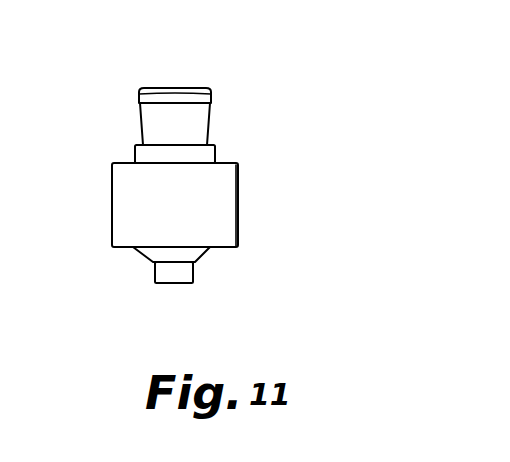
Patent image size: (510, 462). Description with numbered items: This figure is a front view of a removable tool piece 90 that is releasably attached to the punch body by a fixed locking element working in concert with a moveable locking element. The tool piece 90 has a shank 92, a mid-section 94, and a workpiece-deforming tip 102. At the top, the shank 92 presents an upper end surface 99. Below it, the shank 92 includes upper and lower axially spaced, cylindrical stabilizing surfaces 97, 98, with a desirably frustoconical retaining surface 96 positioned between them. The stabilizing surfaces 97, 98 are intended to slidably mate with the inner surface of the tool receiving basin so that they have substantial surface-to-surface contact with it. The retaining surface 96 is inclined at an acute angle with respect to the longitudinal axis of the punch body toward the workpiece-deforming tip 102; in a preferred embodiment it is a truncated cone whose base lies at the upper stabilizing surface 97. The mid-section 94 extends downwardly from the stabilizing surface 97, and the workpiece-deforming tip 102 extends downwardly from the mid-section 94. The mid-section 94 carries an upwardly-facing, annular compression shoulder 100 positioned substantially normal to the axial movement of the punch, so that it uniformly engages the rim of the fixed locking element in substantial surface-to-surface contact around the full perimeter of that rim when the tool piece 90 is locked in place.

The tool piece 90 is at (228, 183).
The shank 92 is at (178, 115).
The mid-section 94 is at (123, 225).
The retaining surface 96 is at (140, 120).
The upper stabilizing surface 97 is at (137, 98).
The lower stabilizing surface 98 is at (135, 150).
The upper end surface 99 is at (167, 87).
The compression shoulder 100 is at (278, 140).
The workpiece-deforming tip 102 is at (183, 280).